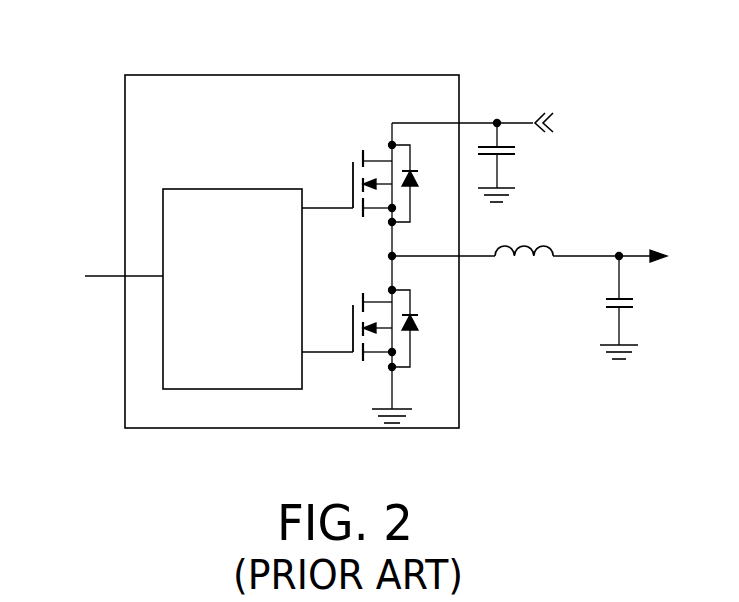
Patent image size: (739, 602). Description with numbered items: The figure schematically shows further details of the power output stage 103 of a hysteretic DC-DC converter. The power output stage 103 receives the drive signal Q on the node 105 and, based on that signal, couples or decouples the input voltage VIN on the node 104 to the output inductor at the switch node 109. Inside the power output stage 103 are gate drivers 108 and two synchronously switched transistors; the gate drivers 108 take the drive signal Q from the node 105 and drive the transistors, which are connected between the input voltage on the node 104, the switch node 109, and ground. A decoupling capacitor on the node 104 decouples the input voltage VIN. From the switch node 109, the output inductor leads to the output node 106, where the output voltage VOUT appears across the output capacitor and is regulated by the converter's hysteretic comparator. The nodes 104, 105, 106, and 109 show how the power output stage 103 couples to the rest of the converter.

The power output stage 103 is at (287, 75).
The input voltage node 104 is at (480, 123).
The drive signal node 105 is at (112, 276).
The output node 106 is at (628, 260).
The gate drivers 108 is at (205, 389).
The switch node 109 is at (483, 256).